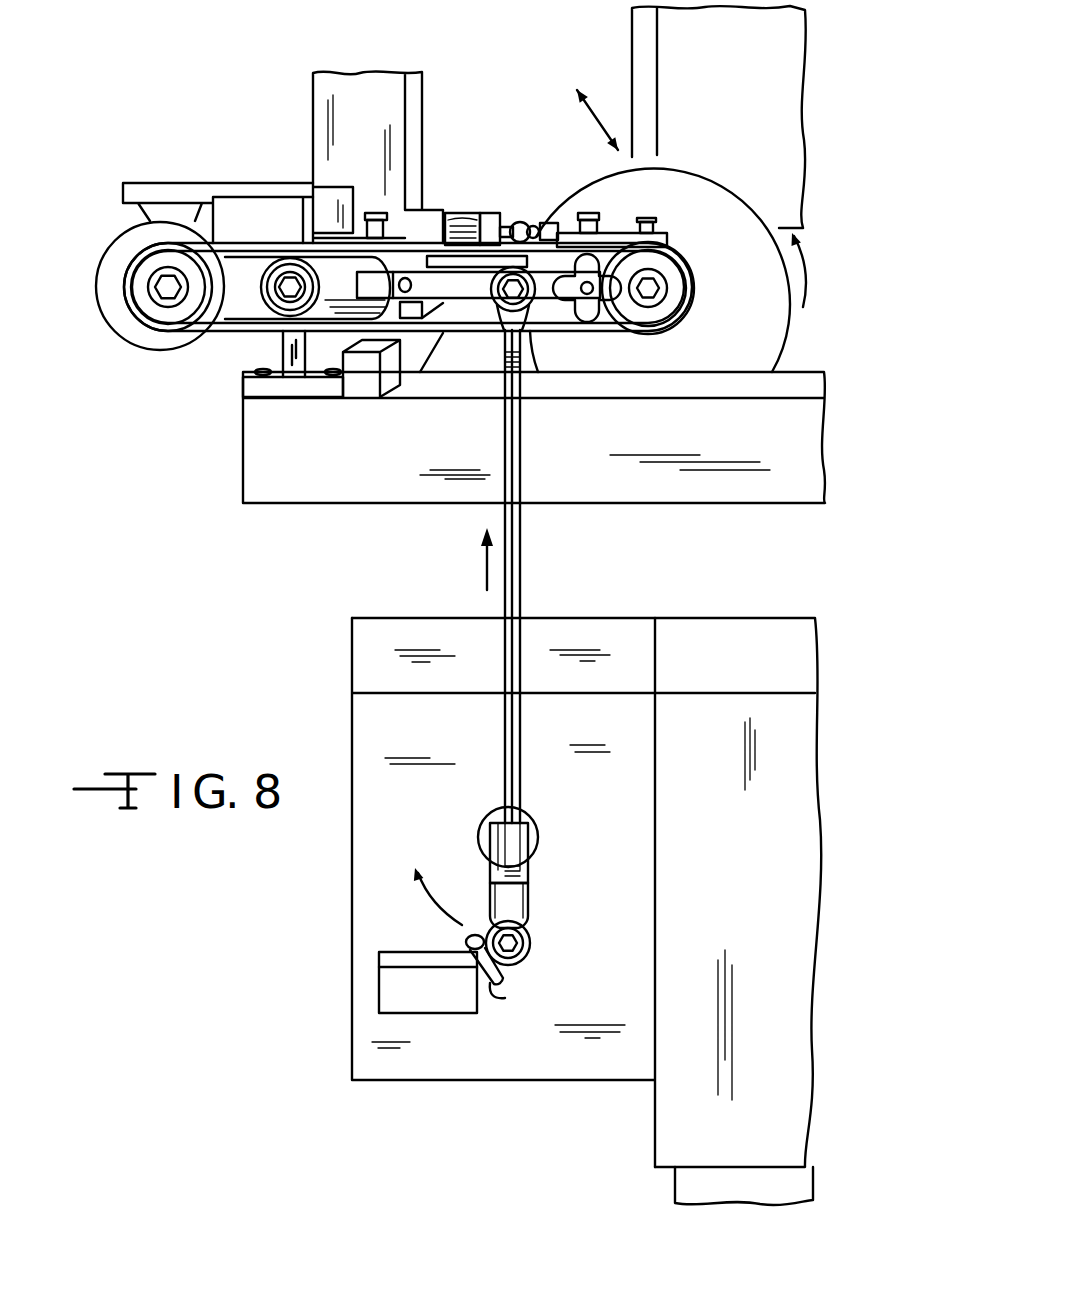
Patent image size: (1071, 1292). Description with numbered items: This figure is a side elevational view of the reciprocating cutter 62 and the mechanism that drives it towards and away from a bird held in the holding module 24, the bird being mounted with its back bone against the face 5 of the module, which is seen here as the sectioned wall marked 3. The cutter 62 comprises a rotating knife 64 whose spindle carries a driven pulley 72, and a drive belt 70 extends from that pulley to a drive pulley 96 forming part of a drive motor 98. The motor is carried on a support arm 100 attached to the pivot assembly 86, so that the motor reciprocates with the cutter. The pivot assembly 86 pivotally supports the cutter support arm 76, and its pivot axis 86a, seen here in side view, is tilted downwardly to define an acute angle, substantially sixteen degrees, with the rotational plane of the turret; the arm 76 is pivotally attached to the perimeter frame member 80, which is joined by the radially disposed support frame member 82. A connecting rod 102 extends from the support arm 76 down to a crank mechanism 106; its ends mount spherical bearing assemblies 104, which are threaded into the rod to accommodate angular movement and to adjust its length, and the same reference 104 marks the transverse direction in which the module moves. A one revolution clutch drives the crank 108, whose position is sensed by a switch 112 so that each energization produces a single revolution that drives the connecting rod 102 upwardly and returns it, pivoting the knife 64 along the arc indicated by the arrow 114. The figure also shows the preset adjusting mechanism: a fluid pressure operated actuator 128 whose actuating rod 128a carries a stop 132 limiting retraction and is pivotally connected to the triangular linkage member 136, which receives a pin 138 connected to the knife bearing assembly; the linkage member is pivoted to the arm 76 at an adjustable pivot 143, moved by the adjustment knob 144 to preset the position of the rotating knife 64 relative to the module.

The section line indicator 3 is at (647, 58).
The face 5 is at (730, 107).
The holding module 24 is at (805, 286).
The reciprocating cutter 62 is at (496, 128).
The rotating knife 64 is at (722, 290).
The drive belt 70 is at (558, 340).
The driven pulley 72 is at (665, 320).
The arm 76 is at (466, 299).
The perimeter frame member 80 is at (385, 461).
The radially disposed support frame member 82 is at (420, 350).
The pivot assembly 86 is at (258, 342).
The pivot axis 86a is at (258, 287).
The drive pulley 96 is at (147, 298).
The drive motor 98 is at (176, 232).
The support arm 100 is at (247, 192).
The connecting rod 102 is at (515, 553).
The spherical bearing assemblies 104 is at (630, 30).
The crank mechanism 106 is at (584, 907).
The crank 108 is at (525, 873).
The switch 112 is at (434, 1000).
The arrow 114 is at (592, 122).
The fluid pressure operated actuator 128 is at (454, 215).
The actuating rod 128a is at (530, 226).
The stop 132 is at (377, 210).
The triangular linkage member 136 is at (668, 246).
The pin 138 is at (648, 221).
The pivot 143 is at (600, 222).
The adjustment knob 144 is at (598, 328).